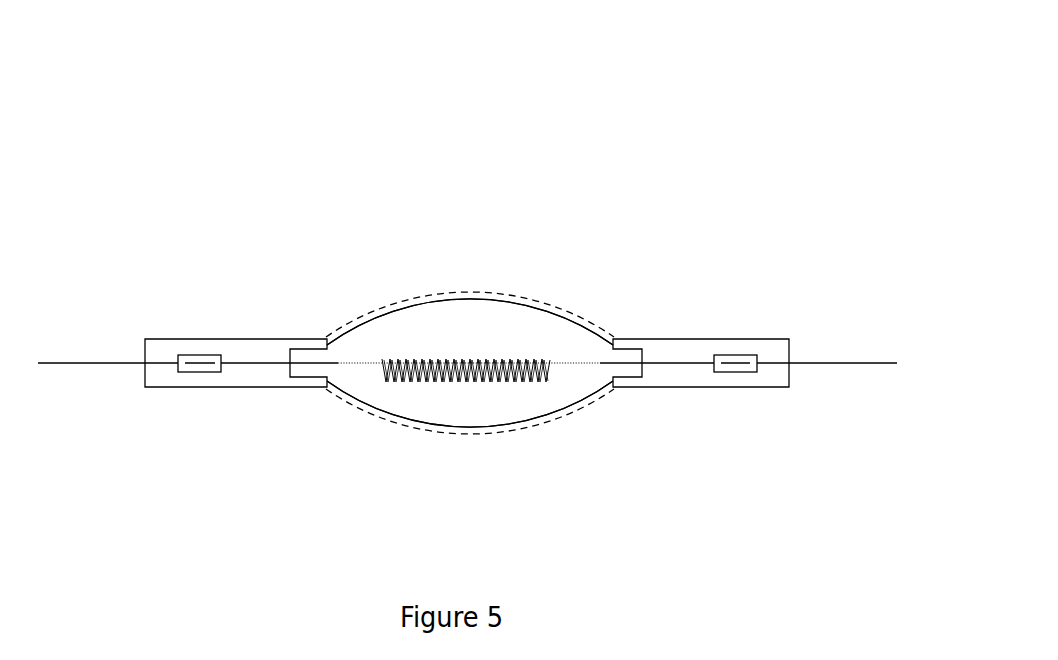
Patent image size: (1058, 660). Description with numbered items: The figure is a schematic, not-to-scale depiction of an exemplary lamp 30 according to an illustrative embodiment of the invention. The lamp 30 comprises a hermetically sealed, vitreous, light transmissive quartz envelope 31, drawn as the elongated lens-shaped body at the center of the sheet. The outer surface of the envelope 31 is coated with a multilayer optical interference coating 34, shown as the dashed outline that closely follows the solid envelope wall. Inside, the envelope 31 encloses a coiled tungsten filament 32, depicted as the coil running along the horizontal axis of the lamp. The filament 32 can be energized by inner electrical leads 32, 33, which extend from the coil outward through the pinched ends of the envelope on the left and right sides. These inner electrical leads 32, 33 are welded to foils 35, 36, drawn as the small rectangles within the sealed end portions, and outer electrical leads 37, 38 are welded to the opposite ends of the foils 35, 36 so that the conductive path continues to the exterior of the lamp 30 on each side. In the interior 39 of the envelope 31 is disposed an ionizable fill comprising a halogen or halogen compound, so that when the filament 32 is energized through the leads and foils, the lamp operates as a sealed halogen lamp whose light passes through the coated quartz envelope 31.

The lamp 30 is at (708, 193).
The envelope 31 is at (560, 417).
The coiled tungsten filament 32 is at (252, 363).
The inner electrical lead 33 is at (673, 363).
The multilayer optical interference coating 34 is at (553, 303).
The foil 35 is at (200, 367).
The foil 36 is at (737, 367).
The outer electrical lead 37 is at (80, 363).
The outer electrical lead 38 is at (830, 363).
The interior 39 is at (443, 327).